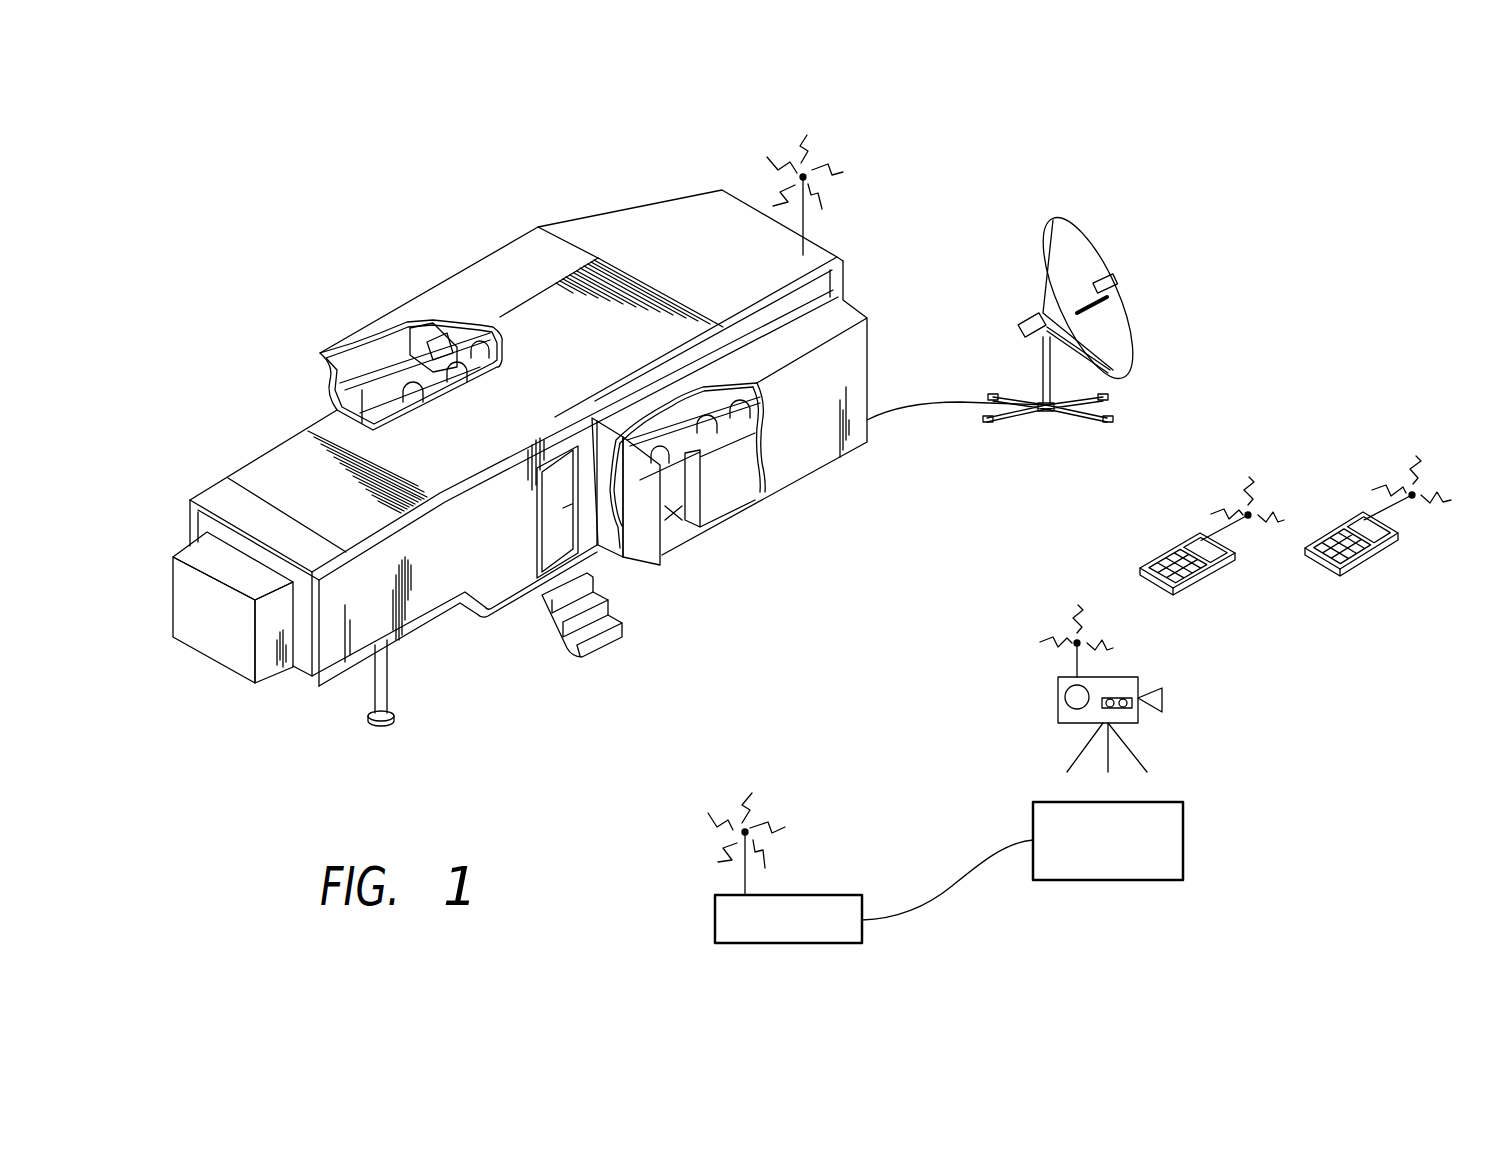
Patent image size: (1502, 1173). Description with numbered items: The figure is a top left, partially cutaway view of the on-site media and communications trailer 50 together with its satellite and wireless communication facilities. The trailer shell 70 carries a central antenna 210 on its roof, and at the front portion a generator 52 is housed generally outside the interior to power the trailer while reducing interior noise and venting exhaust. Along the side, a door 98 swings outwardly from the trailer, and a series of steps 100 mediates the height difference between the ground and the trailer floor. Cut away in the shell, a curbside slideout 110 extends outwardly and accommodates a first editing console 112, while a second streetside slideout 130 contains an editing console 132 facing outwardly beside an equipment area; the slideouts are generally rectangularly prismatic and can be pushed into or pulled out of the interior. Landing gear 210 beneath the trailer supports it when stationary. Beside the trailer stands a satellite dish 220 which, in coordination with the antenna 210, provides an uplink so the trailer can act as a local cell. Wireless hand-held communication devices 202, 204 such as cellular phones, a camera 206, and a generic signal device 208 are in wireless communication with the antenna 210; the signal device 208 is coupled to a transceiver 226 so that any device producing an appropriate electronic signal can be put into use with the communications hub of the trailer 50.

The on-site media and communications trailer 50 is at (238, 417).
The generator 52 is at (243, 628).
The trailer shell 70 is at (736, 238).
The door 98 is at (572, 498).
The steps 100 is at (622, 633).
The curbside slideout 110 is at (568, 233).
The first editing console 112 is at (429, 328).
The second streetside slideout 130 is at (867, 442).
The editing console 132 is at (754, 469).
The wireless hand-held communication device 202 is at (1360, 562).
The wireless hand-held communication device 204 is at (1175, 545).
The camera 206 is at (1115, 680).
The signal device 208 is at (1183, 833).
The central antenna 210 is at (805, 215).
The satellite dish 220 is at (1087, 240).
The transceiver 226 is at (810, 895).